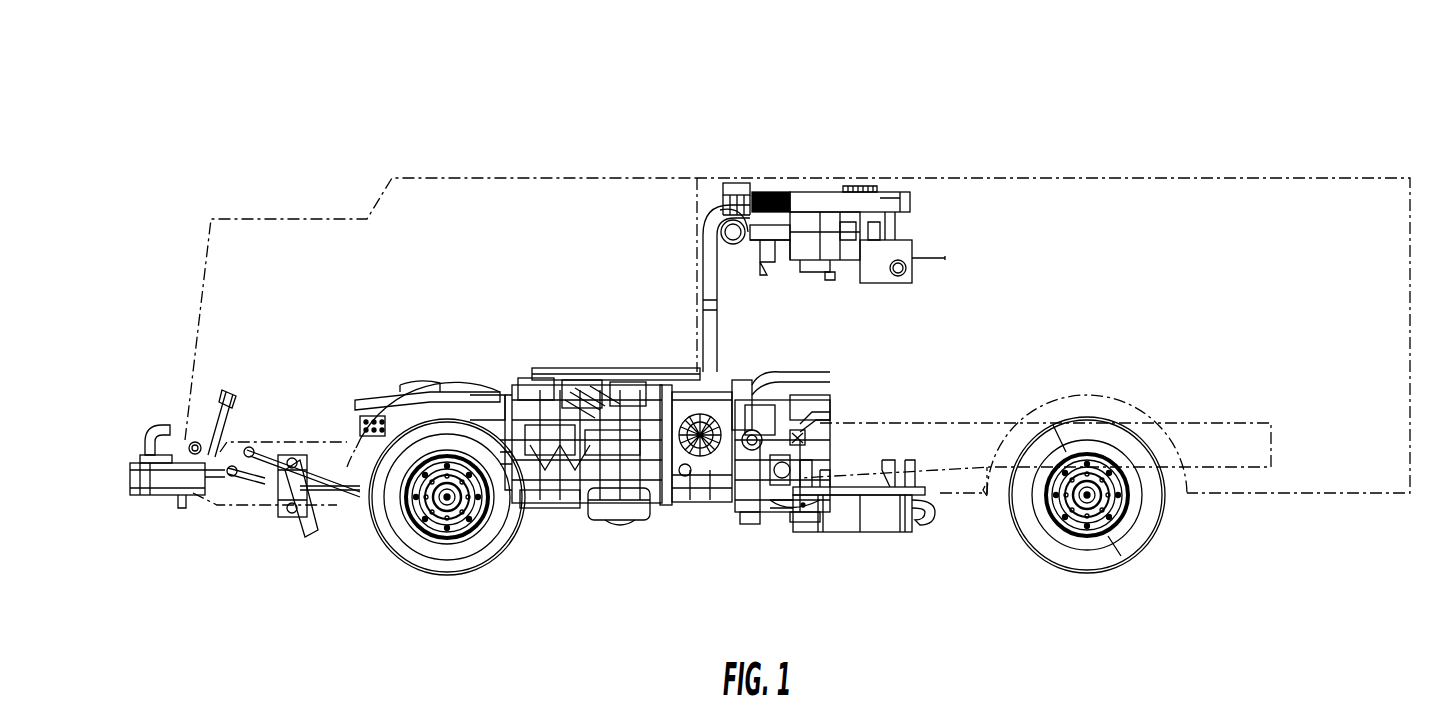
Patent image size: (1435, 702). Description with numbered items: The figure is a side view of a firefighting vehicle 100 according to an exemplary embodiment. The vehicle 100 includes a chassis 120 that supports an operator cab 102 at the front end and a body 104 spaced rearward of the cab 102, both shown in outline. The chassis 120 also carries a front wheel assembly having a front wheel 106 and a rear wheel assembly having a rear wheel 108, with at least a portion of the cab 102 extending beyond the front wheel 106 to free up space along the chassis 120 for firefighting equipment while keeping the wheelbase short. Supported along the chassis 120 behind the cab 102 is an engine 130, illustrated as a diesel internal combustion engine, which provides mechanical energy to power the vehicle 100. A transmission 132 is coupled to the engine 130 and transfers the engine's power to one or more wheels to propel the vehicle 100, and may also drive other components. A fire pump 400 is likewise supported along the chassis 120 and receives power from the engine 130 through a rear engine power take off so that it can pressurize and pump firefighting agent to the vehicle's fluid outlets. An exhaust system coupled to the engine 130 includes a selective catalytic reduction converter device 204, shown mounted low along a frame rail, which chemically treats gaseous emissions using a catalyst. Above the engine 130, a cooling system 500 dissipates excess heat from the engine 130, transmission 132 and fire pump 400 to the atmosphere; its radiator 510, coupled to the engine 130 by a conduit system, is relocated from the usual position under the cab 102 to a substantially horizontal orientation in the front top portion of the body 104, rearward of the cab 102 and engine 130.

The vehicle 100 is at (603, 82).
The operator cab 102 is at (271, 219).
The body 104 is at (1135, 178).
The front wheel 106 is at (425, 565).
The rear wheel 108 is at (1065, 553).
The chassis 120 is at (1213, 446).
The engine 130 is at (600, 508).
The transmission 132 is at (777, 520).
The selective catalytic reduction converter device 204 is at (870, 526).
The fire pump 400 is at (778, 360).
The cooling system 500 is at (818, 183).
The radiator 510 is at (838, 198).